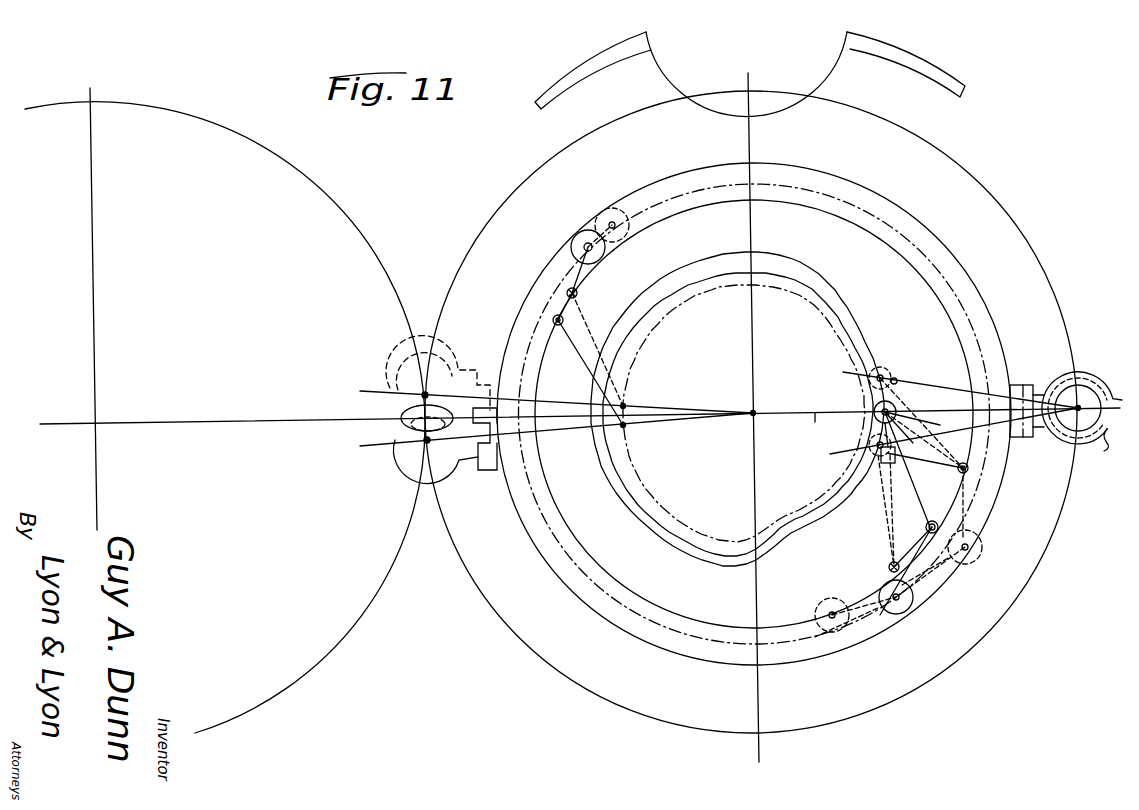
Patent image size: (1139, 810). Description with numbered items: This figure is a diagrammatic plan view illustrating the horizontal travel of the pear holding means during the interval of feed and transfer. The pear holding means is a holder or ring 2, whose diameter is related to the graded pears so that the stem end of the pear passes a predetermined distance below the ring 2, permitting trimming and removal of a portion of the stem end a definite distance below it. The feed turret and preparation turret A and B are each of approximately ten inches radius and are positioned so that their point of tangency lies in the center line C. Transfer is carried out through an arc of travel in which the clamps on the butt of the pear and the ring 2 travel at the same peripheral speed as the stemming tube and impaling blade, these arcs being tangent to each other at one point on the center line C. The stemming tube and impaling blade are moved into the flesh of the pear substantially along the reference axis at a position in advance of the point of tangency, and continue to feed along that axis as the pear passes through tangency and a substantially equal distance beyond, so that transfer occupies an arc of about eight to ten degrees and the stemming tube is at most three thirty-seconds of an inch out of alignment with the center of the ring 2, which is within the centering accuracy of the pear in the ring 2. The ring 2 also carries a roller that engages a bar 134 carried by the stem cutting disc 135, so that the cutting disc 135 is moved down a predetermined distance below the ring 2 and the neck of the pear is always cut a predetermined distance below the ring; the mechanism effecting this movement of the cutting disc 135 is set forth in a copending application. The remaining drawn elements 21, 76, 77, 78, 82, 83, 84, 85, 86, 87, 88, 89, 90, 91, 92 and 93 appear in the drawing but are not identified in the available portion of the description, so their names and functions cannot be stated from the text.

The holder or ring 2 is at (1108, 440).
The roller 21 is at (884, 370).
The cam ring 76 is at (868, 336).
The link 77 is at (907, 393).
The plate 78 is at (925, 448).
The pin 82 is at (836, 632).
The stationary ring 83 is at (652, 612).
The center axis 84 is at (756, 409).
The cam inner profile 85 is at (697, 527).
The link 86 is at (810, 608).
The roller 87 is at (822, 632).
The roller 88 is at (879, 614).
The slider 89 is at (880, 453).
The pin 90 is at (905, 425).
The link 91 is at (935, 585).
The roller 92 is at (983, 548).
The pin 93 is at (890, 380).
The bar 134 is at (926, 70).
The stem cutting disc 135 is at (848, 35).
The feed turret A is at (530, 176).
The preparation turret B is at (308, 176).
The center line C is at (814, 428).